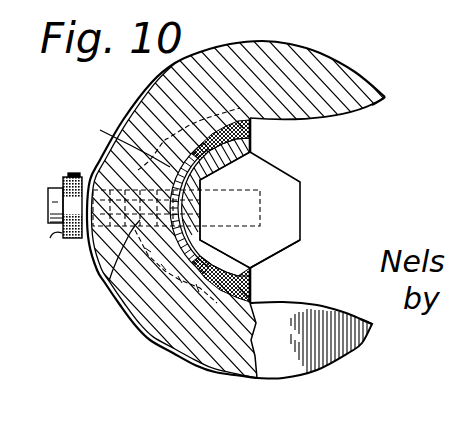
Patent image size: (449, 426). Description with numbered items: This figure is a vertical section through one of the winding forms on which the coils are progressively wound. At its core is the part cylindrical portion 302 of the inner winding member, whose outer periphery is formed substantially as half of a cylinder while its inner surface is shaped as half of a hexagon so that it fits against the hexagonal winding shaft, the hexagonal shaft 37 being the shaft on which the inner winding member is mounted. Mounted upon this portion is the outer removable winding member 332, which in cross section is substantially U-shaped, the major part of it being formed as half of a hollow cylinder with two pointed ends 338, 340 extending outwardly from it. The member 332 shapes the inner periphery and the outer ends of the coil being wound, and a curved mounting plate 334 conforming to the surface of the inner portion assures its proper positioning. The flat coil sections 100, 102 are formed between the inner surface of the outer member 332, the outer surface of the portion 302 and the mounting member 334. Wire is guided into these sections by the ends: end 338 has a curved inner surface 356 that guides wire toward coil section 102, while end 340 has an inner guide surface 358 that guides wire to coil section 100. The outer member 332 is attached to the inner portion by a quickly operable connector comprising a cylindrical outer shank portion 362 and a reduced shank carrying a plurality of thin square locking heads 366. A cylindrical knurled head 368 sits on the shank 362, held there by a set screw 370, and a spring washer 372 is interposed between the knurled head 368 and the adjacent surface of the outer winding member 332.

The outer removable winding member 332 is at (322, 72).
The pointed end 338 is at (387, 97).
The curved inner surface 356 is at (362, 117).
The coil section 102 is at (252, 127).
The locking heads 366 is at (283, 159).
The hex nut 37 is at (285, 198).
The part cylindrical portion 302 is at (252, 268).
The coil section 100 is at (253, 293).
The inner guide surface 358 is at (339, 291).
The pointed end 340 is at (372, 326).
The mounting plate 334 is at (100, 130).
The set screw 370 is at (82, 175).
The cylindrical outer shank portion 362 is at (50, 202).
The knurled head 368 is at (84, 240).
The spring washer 372 is at (94, 284).